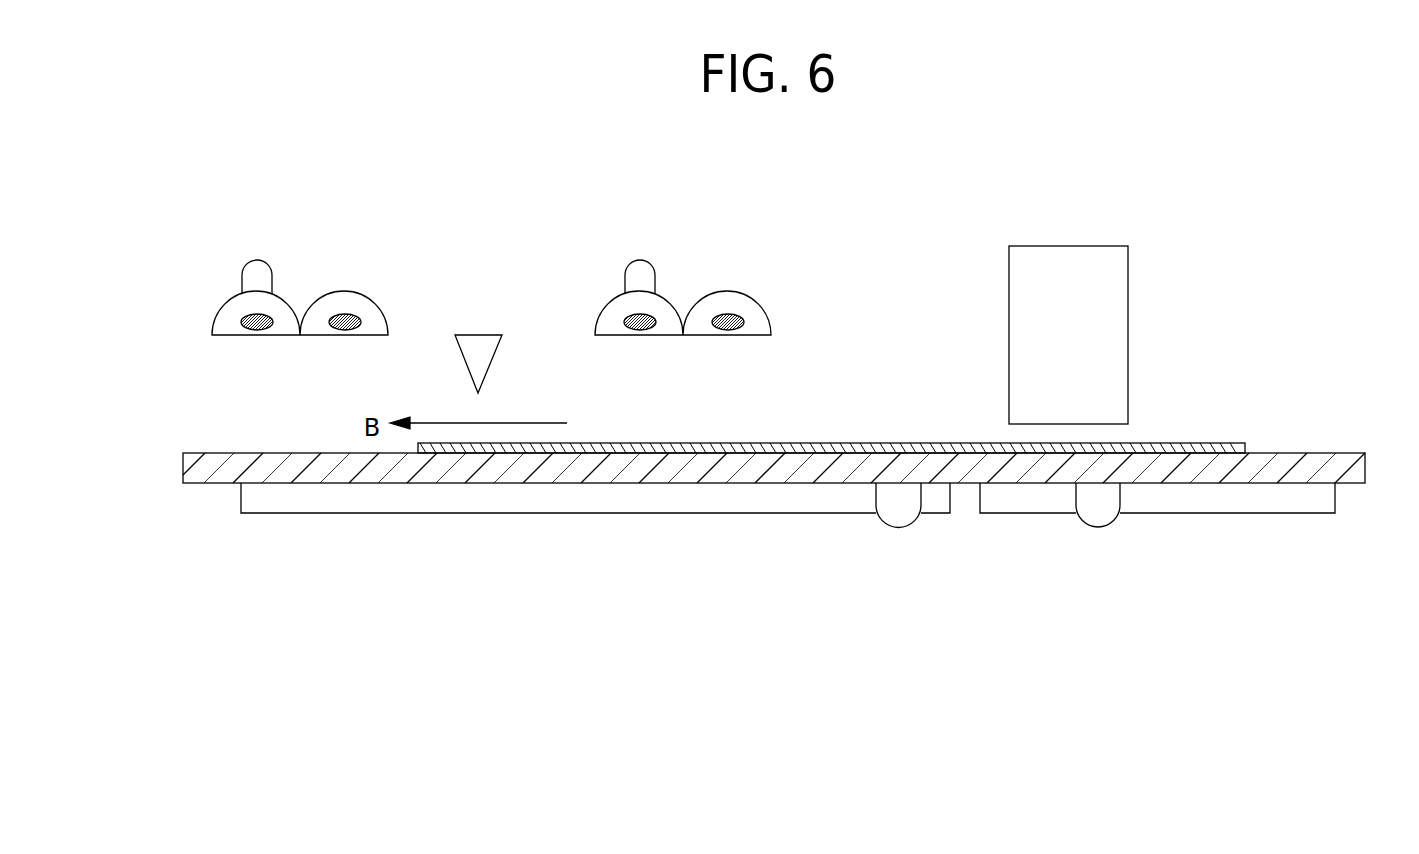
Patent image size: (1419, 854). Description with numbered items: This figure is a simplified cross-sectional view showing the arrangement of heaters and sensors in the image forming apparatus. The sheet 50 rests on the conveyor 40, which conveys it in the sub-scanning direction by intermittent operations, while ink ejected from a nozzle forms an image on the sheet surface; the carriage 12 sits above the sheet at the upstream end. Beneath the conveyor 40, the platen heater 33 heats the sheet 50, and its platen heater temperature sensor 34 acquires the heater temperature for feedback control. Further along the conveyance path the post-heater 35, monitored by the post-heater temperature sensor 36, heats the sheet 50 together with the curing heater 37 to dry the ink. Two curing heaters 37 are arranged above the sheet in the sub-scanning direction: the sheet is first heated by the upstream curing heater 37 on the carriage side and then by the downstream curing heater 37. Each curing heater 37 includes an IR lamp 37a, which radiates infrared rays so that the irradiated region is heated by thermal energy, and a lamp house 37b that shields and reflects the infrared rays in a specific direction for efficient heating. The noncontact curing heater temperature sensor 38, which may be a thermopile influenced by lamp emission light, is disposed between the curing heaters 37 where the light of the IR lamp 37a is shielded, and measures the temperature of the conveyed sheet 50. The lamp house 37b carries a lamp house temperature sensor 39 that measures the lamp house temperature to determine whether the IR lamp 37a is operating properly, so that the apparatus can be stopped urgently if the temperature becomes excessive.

The carriage 12 is at (1080, 255).
The platen heater 33 is at (1230, 500).
The platen heater temperature sensor 34 is at (1118, 514).
The post-heater 35 is at (688, 497).
The post-heater temperature sensor 36 is at (905, 513).
The curing heater 37 is at (230, 244).
The IR lamp 37a is at (255, 315).
The lamp house 37b is at (222, 320).
The curing heater temperature sensor 38 is at (472, 345).
The lamp house temperature sensor 39 is at (255, 277).
The conveyor 40 is at (1328, 455).
The sheet 50 is at (1222, 443).